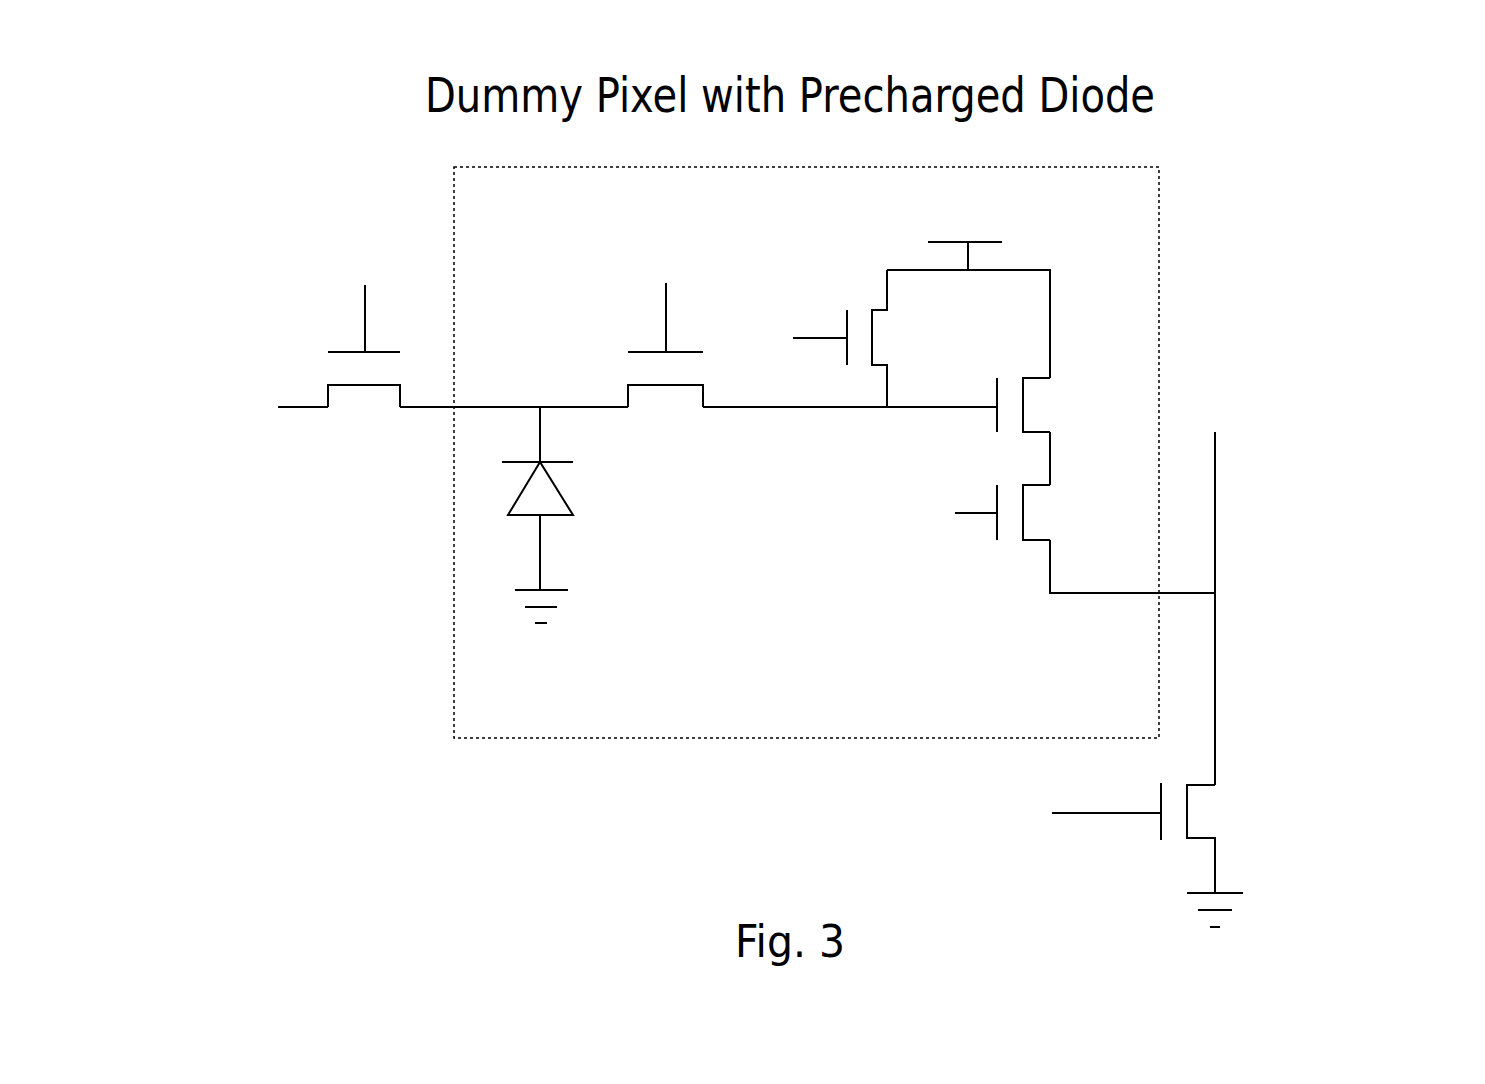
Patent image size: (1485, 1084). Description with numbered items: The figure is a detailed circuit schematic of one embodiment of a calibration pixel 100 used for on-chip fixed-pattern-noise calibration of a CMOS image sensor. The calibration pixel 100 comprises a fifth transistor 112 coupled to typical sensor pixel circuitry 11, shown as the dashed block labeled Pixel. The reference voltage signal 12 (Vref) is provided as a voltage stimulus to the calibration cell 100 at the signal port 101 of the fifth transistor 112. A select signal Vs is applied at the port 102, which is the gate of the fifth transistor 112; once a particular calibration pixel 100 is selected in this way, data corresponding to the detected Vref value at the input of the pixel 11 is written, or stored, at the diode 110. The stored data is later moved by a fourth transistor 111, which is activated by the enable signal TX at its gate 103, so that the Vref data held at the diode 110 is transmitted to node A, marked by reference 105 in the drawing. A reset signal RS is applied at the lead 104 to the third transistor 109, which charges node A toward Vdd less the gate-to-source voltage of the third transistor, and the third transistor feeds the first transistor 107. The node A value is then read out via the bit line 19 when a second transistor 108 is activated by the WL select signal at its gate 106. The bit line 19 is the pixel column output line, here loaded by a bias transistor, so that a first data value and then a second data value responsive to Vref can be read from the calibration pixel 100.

The calibration pixel 100 is at (1453, 113).
The pixel circuitry 11 is at (1159, 243).
The reference voltage signal 12 is at (233, 420).
The signal port 101 is at (302, 408).
The port 102 is at (365, 325).
The gate 103 is at (666, 330).
The RS gate line 104 is at (820, 338).
The node A 105 is at (887, 407).
The gate 106 is at (978, 513).
The transistor M1 107 is at (1068, 398).
The transistor 108 is at (1068, 513).
The transistor M3 109 is at (912, 335).
The diode 110 is at (562, 493).
The transistor 111 is at (677, 413).
The transistor 112 is at (360, 415).
The bit line 19 is at (1215, 517).